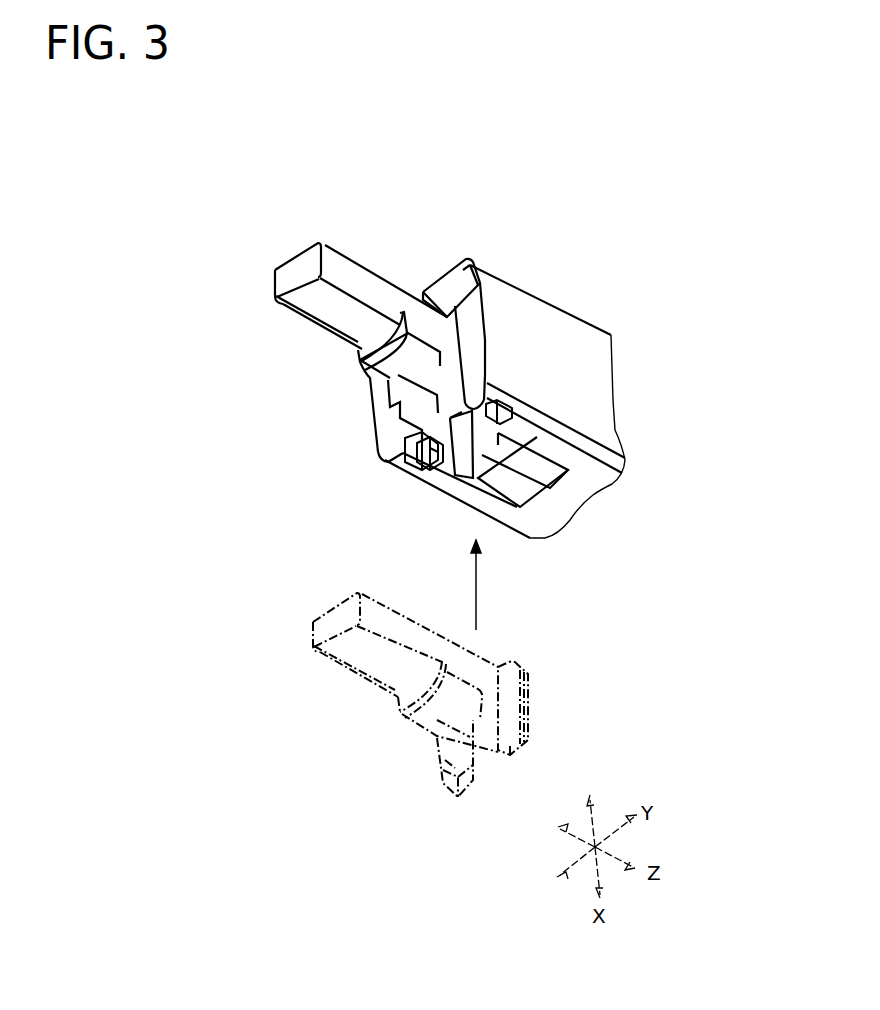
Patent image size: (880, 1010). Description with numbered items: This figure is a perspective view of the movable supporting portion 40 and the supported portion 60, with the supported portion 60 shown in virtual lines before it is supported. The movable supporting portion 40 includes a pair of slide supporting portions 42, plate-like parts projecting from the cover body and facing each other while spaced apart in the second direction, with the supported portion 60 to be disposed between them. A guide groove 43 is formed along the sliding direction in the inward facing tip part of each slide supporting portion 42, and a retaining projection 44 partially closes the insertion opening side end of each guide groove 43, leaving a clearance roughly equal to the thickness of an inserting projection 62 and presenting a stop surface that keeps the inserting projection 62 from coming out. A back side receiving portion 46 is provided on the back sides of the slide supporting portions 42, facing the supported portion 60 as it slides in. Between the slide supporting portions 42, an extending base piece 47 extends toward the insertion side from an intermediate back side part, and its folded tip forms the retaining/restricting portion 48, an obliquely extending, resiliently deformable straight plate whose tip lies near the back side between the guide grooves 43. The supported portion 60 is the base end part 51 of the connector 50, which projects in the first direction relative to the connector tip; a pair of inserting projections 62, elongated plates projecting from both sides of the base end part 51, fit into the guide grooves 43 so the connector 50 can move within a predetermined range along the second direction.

The movable supporting portion 40 is at (553, 300).
The slide supporting portion 42 is at (500, 290).
The guide groove 43 is at (478, 395).
The retaining projection 44 is at (510, 410).
The back side receiving portion 46 is at (450, 283).
The extending base piece 47 is at (533, 475).
The retaining/restricting portion 48 is at (468, 460).
The connector 50 is at (313, 238).
The base end part 51 is at (455, 365).
The supported portion 60 is at (410, 438).
The inserting projection 62 is at (410, 450).